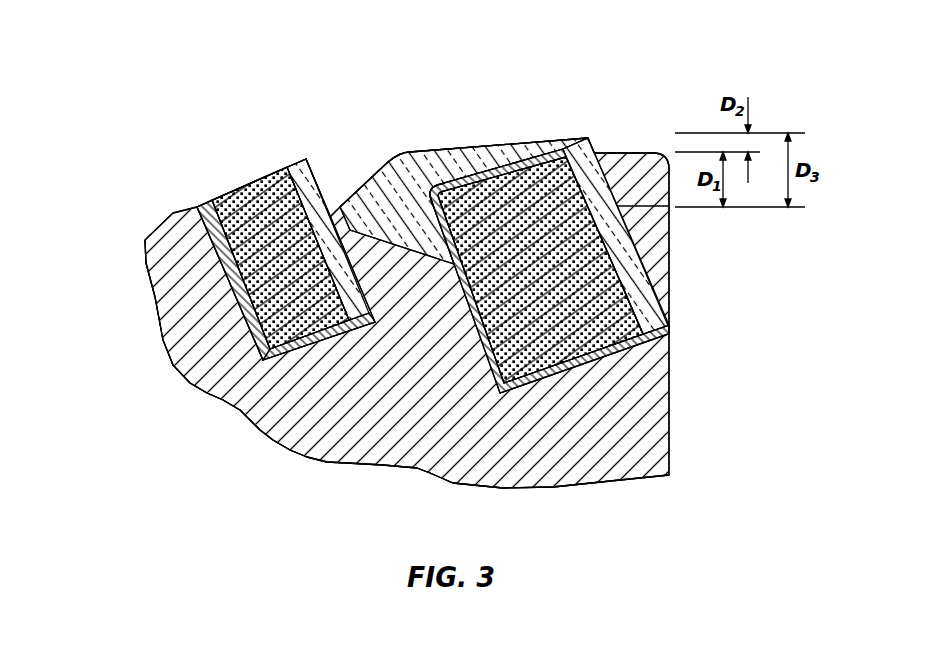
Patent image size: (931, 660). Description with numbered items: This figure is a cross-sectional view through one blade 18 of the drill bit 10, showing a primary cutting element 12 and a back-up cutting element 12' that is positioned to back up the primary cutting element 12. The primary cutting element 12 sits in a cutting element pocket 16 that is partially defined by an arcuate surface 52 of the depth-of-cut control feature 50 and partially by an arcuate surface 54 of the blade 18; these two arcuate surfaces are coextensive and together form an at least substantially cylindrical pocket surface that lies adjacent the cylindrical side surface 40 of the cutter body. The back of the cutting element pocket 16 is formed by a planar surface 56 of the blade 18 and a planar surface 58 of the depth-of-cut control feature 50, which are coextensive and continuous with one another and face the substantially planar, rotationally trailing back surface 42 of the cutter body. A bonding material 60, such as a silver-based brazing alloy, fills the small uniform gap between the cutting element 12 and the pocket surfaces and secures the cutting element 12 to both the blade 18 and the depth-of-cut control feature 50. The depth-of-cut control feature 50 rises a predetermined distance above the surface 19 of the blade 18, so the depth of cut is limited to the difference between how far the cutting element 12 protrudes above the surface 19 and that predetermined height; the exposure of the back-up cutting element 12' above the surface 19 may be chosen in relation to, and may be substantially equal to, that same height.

The drill bit 10 is at (147, 193).
The cutting element 12 is at (660, 236).
The back-up cutting element 12' is at (281, 229).
The cutting element pocket 16 is at (655, 258).
The blade 18 is at (320, 433).
The surface of the blade 19 is at (631, 152).
The cylindrical side surface 40 is at (495, 165).
The back surface 42 is at (457, 307).
The depth-of-cut control feature 50 is at (452, 145).
The arcuate surface 52 is at (540, 165).
The arcuate surface 54 is at (632, 310).
The planar surface 56 is at (430, 470).
The planar surface 58 is at (440, 180).
The bonding material 60 is at (218, 273).